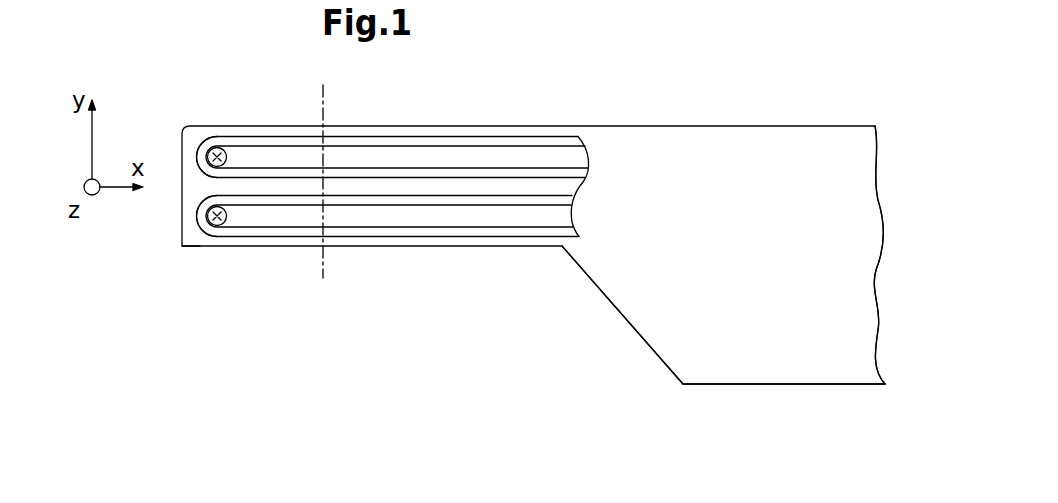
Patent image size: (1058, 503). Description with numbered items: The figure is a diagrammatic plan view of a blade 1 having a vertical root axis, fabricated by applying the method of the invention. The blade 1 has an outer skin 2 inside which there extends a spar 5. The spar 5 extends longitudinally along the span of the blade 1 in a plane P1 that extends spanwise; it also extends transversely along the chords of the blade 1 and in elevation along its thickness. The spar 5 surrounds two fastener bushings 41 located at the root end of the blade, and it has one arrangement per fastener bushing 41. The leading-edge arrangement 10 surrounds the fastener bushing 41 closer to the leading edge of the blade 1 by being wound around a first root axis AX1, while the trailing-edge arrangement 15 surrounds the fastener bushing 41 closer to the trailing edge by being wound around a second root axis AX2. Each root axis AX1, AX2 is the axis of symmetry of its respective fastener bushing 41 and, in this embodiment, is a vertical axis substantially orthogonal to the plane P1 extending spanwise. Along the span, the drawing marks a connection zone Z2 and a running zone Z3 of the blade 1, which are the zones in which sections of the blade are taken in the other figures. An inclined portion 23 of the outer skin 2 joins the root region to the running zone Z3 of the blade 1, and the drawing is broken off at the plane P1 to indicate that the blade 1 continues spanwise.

The blade 1 is at (513, 241).
The outer skin 2 is at (651, 126).
The spar 5 is at (185, 246).
The leading-edge arrangement 10 is at (392, 112).
The trailing-edge arrangement 15 is at (387, 269).
The inclined section 23 is at (658, 293).
The fastener bushing 41 is at (196, 156).
The first root axis AX1 is at (217, 150).
The second root axis AX2 is at (218, 222).
The connection zone Z2 is at (323, 298).
The running zone Z3 is at (752, 399).
The plane extending spanwise P1 is at (903, 255).